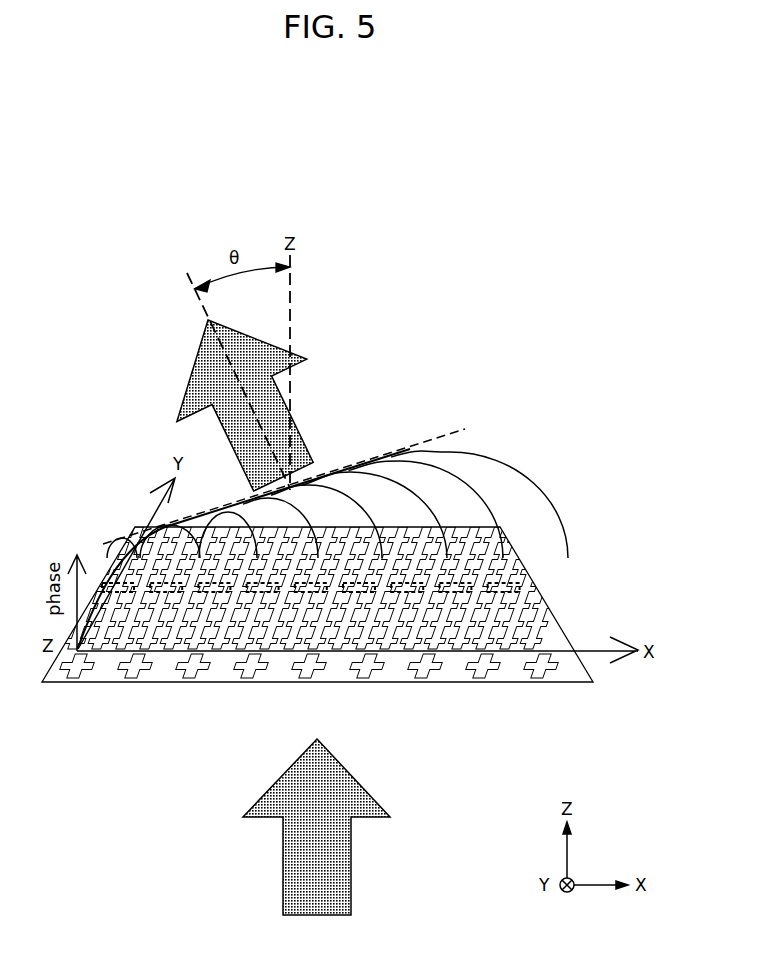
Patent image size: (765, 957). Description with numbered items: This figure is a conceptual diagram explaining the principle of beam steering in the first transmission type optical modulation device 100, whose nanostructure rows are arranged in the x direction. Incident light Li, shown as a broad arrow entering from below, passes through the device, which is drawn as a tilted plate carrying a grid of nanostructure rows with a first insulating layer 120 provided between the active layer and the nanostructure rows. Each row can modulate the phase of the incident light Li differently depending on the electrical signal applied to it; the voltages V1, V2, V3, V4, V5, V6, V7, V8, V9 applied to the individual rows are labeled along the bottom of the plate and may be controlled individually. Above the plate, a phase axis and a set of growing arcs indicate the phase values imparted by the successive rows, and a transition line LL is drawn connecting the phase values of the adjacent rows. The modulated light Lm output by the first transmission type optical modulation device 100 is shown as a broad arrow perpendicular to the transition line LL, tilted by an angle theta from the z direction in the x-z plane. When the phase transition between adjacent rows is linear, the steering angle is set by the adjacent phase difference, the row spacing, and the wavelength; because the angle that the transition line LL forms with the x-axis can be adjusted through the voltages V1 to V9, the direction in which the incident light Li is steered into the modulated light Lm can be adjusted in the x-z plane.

The first transmission type optical modulation device 100 is at (359, 620).
The first insulating layer 120 is at (535, 646).
The voltage V1 is at (93, 648).
The voltage V2 is at (147, 648).
The voltage V3 is at (203, 648).
The voltage V4 is at (258, 648).
The voltage V5 is at (311, 648).
The voltage V6 is at (363, 648).
The voltage V7 is at (418, 648).
The voltage V8 is at (473, 648).
The voltage V9 is at (530, 648).
The transition line LL is at (463, 430).
The modulated light Lm is at (239, 382).
The incident light Li is at (316, 828).